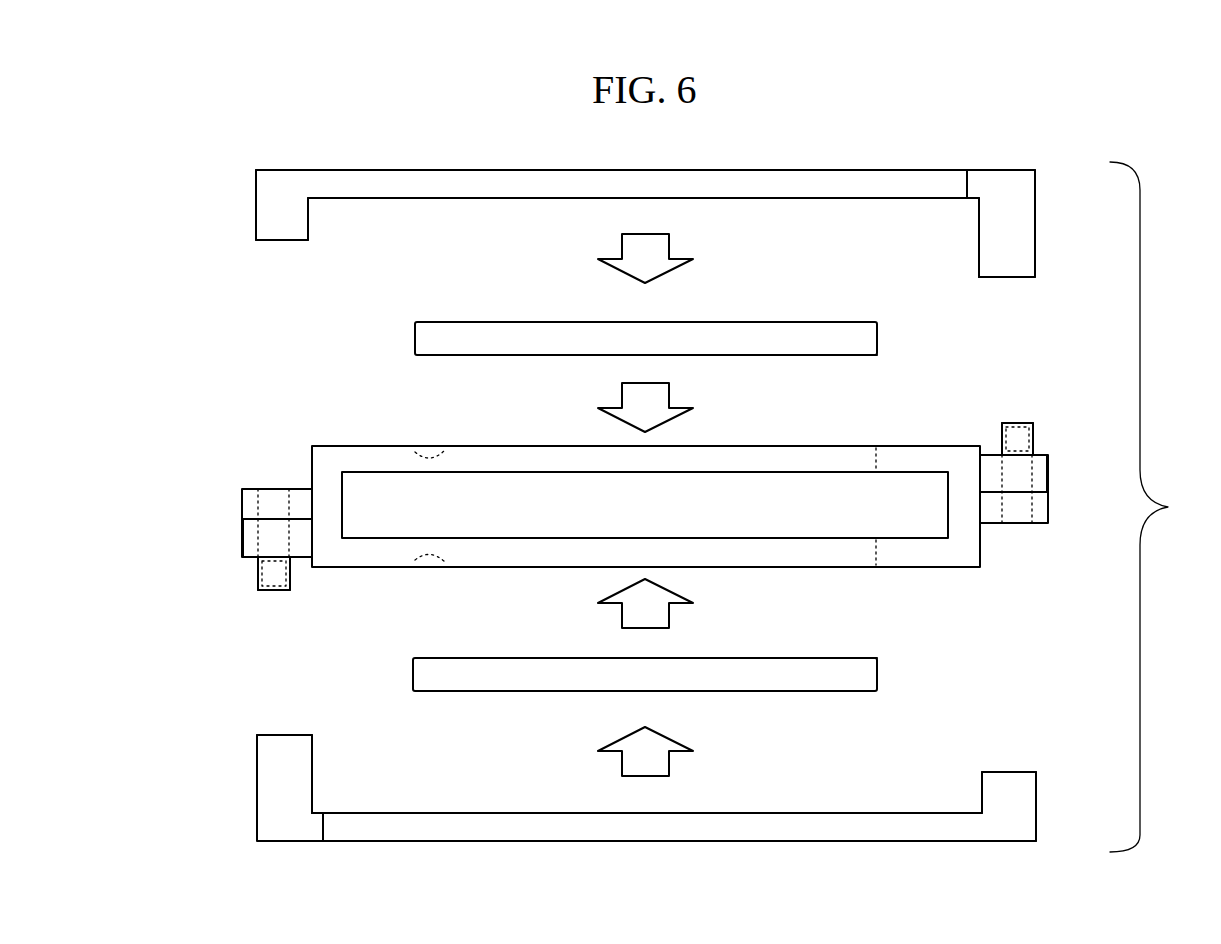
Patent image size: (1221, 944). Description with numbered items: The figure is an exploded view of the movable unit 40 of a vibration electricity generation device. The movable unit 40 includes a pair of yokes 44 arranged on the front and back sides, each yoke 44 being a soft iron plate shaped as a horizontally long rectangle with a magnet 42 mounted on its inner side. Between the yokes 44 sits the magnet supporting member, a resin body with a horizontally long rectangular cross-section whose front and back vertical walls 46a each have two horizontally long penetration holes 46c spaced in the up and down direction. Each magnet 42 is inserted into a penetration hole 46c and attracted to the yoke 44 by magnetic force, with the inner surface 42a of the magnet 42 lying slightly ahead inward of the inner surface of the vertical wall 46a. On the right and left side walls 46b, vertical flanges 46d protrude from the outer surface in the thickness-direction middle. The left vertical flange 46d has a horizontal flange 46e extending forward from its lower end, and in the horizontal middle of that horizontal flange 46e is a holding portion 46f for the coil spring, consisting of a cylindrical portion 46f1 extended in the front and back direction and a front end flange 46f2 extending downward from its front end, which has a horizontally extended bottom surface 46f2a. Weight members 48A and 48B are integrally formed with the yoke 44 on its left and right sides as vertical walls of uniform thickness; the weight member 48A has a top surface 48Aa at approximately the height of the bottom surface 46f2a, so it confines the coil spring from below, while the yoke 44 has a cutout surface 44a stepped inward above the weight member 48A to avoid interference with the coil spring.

The movable unit 40 is at (1158, 507).
The magnet 42 is at (577, 322).
The inner surface of the magnet 42a is at (705, 357).
The yoke 44 is at (452, 198).
The cutout surface 44a is at (970, 186).
The vertical wall 46a is at (788, 446).
The side wall 46b is at (337, 497).
The penetration hole 46c is at (417, 457).
The vertical flange 46d is at (272, 497).
The horizontal flange 46e is at (272, 535).
The holding portion 46f is at (295, 663).
The cylindrical portion 46f1 is at (233, 556).
The front end flange 46f2 is at (273, 590).
The bottom surface 46f2a is at (297, 580).
The weight member 48A is at (1000, 249).
The top surface 48Aa is at (1007, 218).
The weight member 48B is at (272, 208).